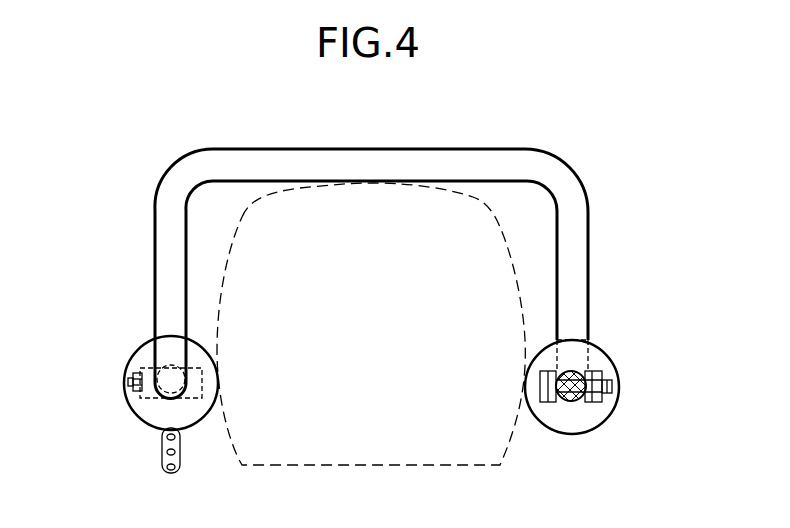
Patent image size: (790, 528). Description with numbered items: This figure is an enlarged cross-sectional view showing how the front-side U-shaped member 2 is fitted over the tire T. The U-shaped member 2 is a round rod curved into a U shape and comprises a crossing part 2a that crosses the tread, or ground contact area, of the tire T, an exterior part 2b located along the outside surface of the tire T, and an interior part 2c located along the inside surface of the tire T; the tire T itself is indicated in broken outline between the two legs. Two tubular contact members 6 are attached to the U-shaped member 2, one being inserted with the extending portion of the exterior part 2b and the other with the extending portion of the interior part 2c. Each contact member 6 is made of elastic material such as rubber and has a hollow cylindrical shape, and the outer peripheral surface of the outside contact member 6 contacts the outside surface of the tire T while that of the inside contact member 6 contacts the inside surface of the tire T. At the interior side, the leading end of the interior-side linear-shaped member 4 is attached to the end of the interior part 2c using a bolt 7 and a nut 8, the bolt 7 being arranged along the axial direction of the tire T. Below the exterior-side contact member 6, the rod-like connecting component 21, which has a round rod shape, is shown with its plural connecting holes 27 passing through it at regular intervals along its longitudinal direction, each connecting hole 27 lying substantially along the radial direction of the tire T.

The front-side U-shaped member 2 is at (371, 235).
The crossing part 2a is at (475, 149).
The exterior part 2b is at (155, 226).
The interior part 2c is at (591, 230).
The interior-side linear-shaped member 4 is at (573, 404).
The contact member 6 is at (192, 423).
The bolt 7 is at (132, 381).
The nut 8 is at (148, 370).
The rod-like connecting component 21 is at (162, 438).
The connecting holes 27 is at (163, 452).
The tire T is at (243, 217).